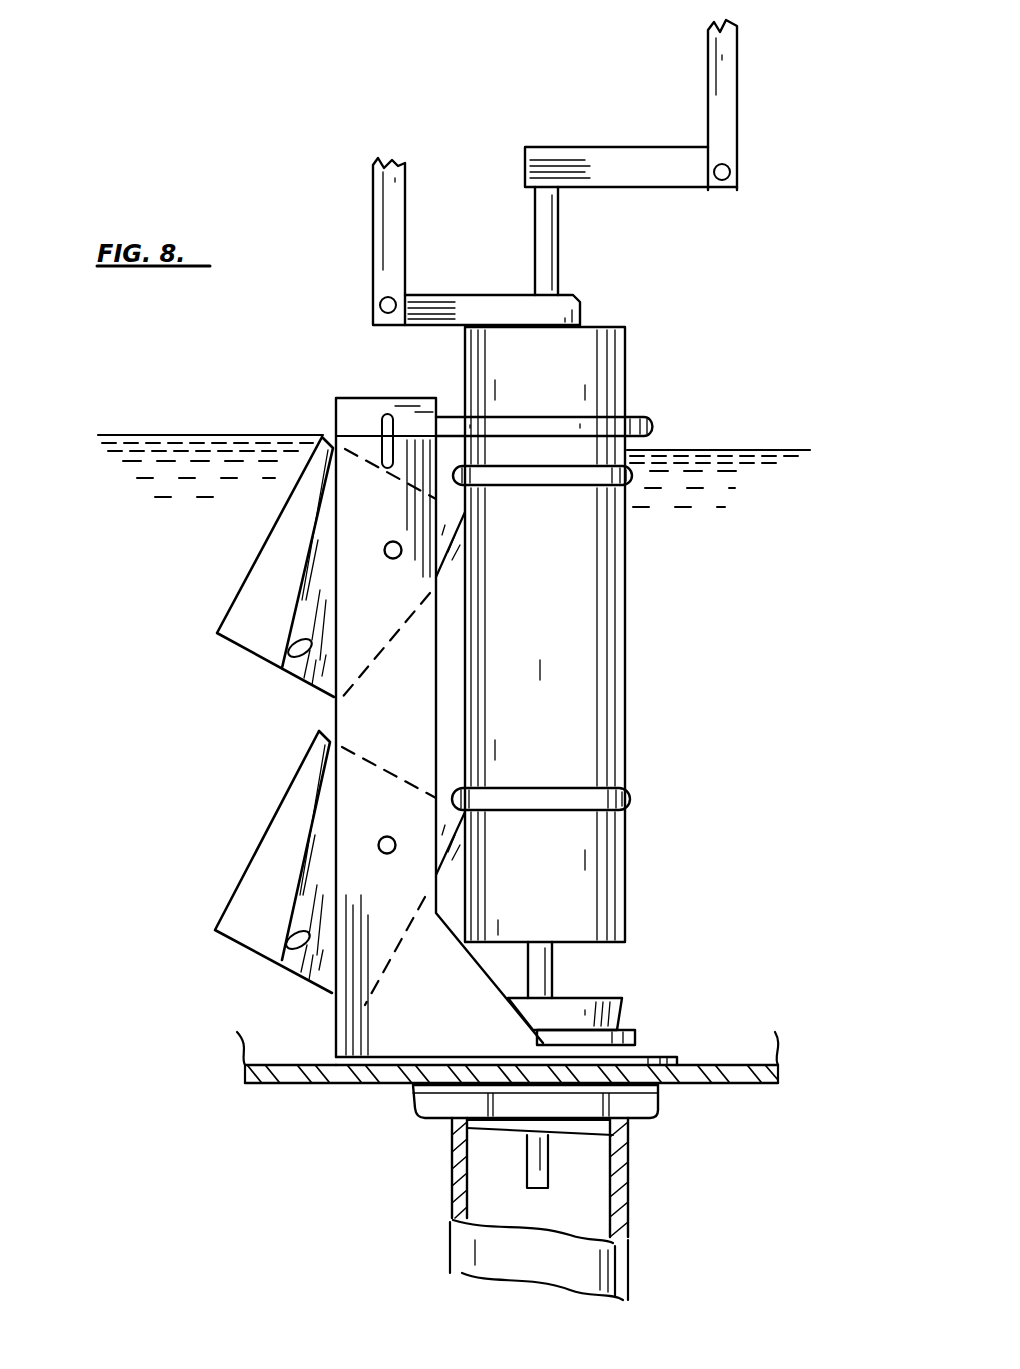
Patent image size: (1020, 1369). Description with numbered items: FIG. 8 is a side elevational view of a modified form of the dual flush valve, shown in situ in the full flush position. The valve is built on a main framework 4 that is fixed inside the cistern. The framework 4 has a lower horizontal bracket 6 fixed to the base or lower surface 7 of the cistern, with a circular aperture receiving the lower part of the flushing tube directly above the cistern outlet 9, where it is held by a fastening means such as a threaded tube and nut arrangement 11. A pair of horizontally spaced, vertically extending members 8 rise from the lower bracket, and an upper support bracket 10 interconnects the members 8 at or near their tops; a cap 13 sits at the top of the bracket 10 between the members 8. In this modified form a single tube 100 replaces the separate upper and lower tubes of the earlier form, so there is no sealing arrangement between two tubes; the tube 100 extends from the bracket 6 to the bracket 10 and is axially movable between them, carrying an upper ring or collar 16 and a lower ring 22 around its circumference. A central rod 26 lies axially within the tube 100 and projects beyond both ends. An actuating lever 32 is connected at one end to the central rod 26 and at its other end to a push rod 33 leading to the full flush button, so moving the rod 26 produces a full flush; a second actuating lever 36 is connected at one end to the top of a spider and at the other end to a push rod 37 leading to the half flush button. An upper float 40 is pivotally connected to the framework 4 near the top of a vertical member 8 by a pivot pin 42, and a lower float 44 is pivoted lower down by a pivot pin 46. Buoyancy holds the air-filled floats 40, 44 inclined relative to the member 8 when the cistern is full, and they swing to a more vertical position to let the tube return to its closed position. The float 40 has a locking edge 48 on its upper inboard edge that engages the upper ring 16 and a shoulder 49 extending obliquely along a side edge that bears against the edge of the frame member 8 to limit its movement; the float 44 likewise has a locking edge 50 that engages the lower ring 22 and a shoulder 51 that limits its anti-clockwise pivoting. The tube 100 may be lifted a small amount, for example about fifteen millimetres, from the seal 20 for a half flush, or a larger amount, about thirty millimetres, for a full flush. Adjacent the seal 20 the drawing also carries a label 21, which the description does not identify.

The main framework 4 is at (312, 1008).
The lower horizontal bracket 6 is at (677, 1053).
The base or lower surface of the cistern 7 is at (713, 1082).
The vertically extending members 8 is at (377, 710).
The outlet of the cistern 9 is at (628, 1177).
The upper support bracket 10 is at (650, 417).
The threaded tube and nut arrangement 11 is at (440, 1102).
The cap 13 is at (416, 694).
The upper ring or collar 16 is at (632, 475).
The seal 20 is at (652, 1020).
The collar 21 is at (630, 1003).
The lower ring 22 is at (630, 797).
The central rod 26 is at (548, 233).
The actuating lever 32 is at (607, 173).
The push rod 33 is at (717, 78).
The actuating lever 36 is at (455, 302).
The push rod 37 is at (382, 190).
The upper float 40 is at (270, 595).
The pivot pin 42 is at (385, 548).
The lower float 44 is at (270, 872).
The pivot pin 46 is at (380, 845).
The locking edge 48 is at (463, 520).
The shoulder 49 is at (282, 668).
The locking edge 50 is at (453, 815).
The shoulder 51 is at (310, 918).
The single tube 100 is at (593, 658).